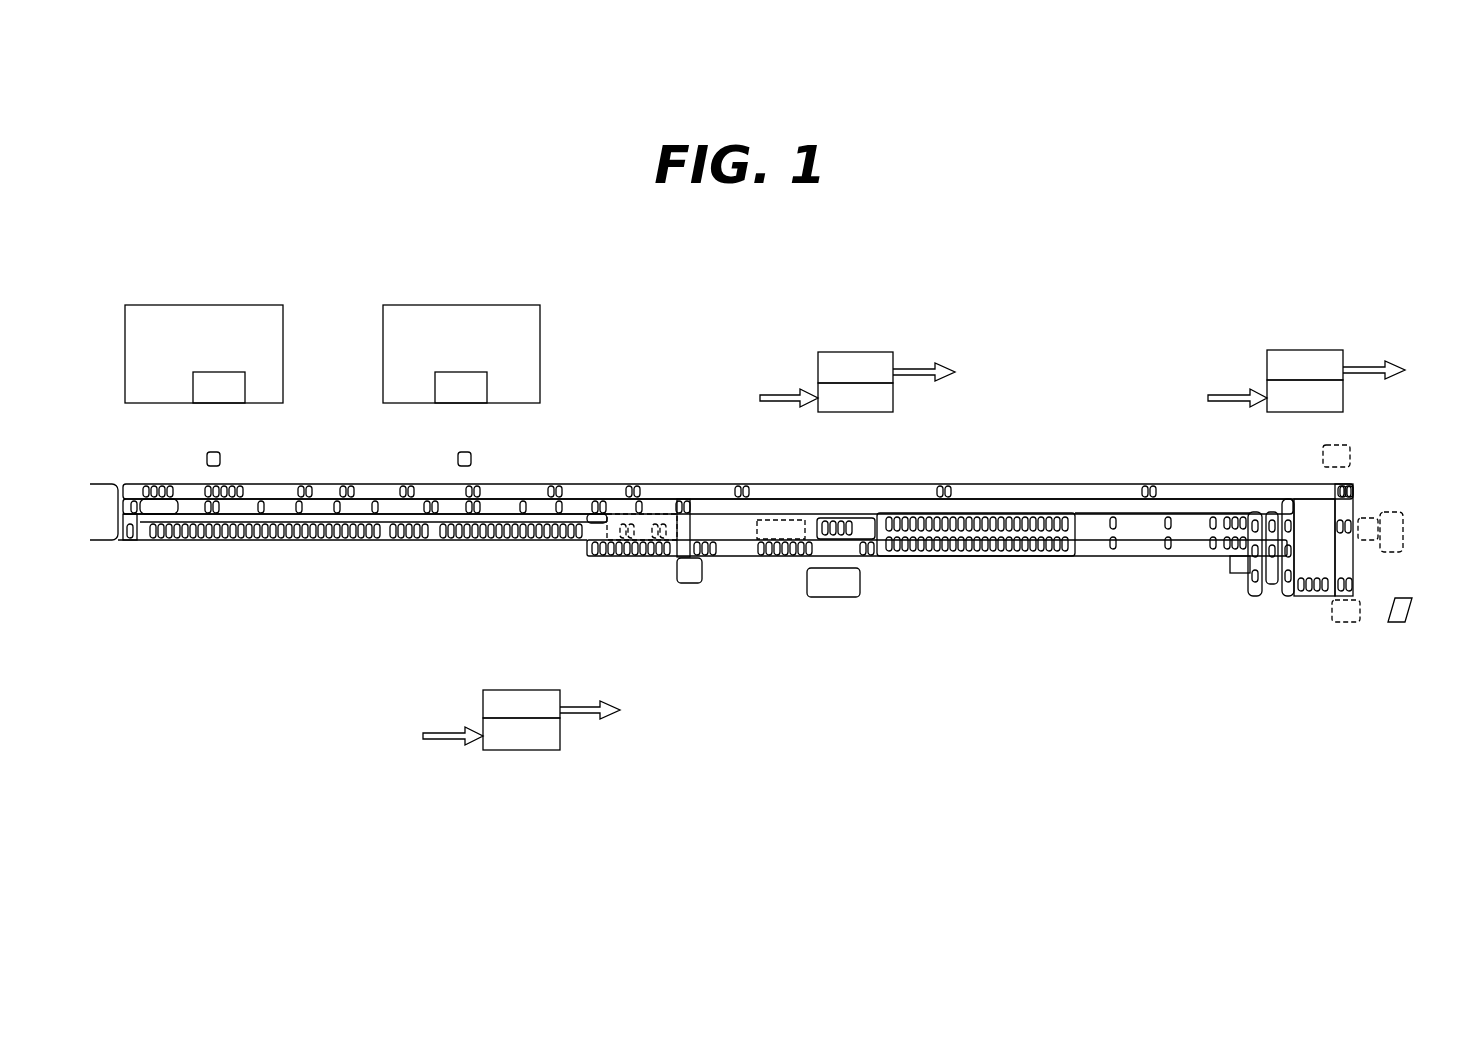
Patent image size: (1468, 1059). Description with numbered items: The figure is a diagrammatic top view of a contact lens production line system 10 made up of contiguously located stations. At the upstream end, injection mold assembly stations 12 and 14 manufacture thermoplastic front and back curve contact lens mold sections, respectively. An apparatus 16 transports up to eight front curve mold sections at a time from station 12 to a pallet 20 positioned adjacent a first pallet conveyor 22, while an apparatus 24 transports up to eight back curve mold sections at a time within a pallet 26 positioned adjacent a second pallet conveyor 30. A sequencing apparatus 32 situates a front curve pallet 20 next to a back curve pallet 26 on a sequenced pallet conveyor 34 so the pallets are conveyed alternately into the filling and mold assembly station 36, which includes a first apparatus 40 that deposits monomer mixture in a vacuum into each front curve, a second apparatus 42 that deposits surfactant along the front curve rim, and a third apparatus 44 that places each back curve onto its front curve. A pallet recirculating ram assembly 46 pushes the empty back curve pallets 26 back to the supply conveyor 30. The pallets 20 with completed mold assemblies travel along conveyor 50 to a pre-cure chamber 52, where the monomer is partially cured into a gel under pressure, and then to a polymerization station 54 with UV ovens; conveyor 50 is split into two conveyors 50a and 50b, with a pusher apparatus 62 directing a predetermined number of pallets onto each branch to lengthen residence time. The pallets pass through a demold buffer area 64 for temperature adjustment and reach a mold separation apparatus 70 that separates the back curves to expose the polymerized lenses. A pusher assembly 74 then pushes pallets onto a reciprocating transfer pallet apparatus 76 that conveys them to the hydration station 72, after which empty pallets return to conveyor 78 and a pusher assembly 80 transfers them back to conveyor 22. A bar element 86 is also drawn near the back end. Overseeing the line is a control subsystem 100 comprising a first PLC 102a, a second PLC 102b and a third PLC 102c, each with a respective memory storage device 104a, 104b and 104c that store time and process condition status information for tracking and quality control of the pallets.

The lens production line system 10 is at (322, 295).
The injection mold assembly station 12 is at (283, 325).
The injection mold assembly station 14 is at (383, 372).
The apparatus 16 is at (219, 388).
The apparatus 24 is at (461, 388).
The pallet 20 is at (222, 452).
The first pallet conveyor 22 is at (290, 494).
The pallet 26 is at (455, 453).
The second pallet conveyor 30 is at (511, 505).
The sequencing apparatus 32 is at (100, 503).
The sequenced pallet conveyor 34 is at (383, 545).
The filling and mold assembly station 36 is at (650, 519).
The first apparatus 40 is at (625, 560).
The second apparatus 42 is at (625, 548).
The third apparatus 44 is at (668, 560).
The pallet recirculating ram assembly 46 is at (593, 505).
The conveyor 50 is at (738, 558).
The conveyor 50a is at (850, 548).
The conveyor 50b is at (848, 518).
The pre-cure chamber 52 is at (788, 518).
The polymerization station 54 is at (990, 557).
The pusher apparatus 62 is at (830, 598).
The demold buffer area 64 is at (1127, 564).
The mold separation apparatus 70 is at (1230, 565).
The hydration station 72 is at (1400, 515).
The pusher assembly 74 is at (1346, 625).
The reciprocating transfer pallet apparatus 76 is at (1375, 553).
The conveyor 78 is at (1350, 510).
The pusher assembly 80 is at (1323, 450).
The transfer bars 86 is at (1257, 512).
The control subsystem 100 is at (860, 352).
The first PLC 102a is at (551, 705).
The second PLC 102b is at (886, 368).
The third PLC 102c is at (1336, 366).
The memory storage device 104a is at (491, 734).
The memory storage device 104b is at (826, 398).
The memory storage device 104c is at (1275, 396).